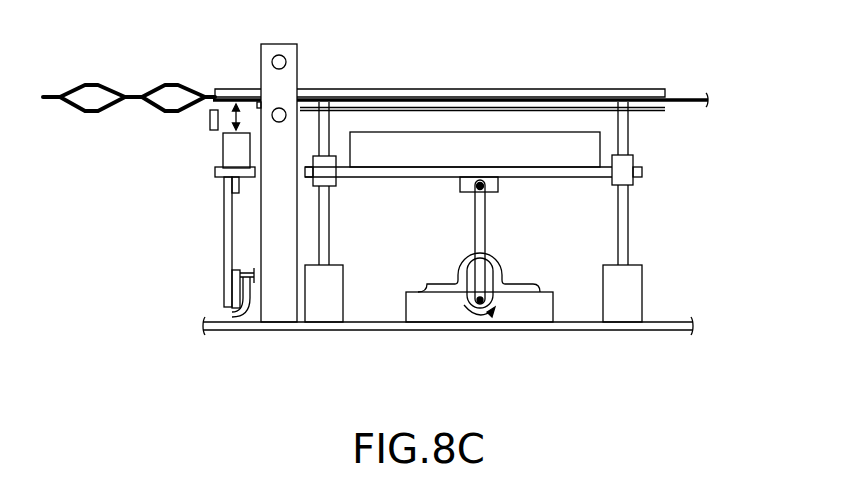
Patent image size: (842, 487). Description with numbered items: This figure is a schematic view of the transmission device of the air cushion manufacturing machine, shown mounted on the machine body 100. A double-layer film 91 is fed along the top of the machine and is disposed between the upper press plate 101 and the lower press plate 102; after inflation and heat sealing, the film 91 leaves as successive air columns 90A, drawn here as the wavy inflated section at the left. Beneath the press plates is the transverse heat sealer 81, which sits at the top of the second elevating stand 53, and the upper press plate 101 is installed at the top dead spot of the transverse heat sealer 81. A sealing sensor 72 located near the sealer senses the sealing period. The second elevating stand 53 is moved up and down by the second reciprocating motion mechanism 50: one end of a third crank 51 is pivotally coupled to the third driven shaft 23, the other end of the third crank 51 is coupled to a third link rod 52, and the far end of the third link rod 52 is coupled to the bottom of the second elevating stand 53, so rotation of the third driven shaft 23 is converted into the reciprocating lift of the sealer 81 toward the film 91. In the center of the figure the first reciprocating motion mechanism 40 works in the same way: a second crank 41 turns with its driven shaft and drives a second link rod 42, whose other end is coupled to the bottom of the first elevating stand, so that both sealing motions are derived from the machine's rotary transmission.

The air columns 90A is at (177, 83).
The double-layer film 91 is at (708, 104).
The upper press plate 101 is at (636, 97).
The lower press plate 102 is at (636, 106).
The sealing sensor 72 is at (208, 127).
The transverse heat sealer 81 is at (225, 157).
The second elevating stand 53 is at (228, 173).
The third link rod 52 is at (228, 228).
The third crank 51 is at (236, 293).
The third driven shaft 23 is at (235, 316).
The second reciprocating motion mechanism 50 is at (150, 180).
The second link rod 42 is at (385, 152).
The second crank 41 is at (490, 276).
The first reciprocating motion mechanism 40 is at (458, 202).
The machine body 100 is at (668, 322).